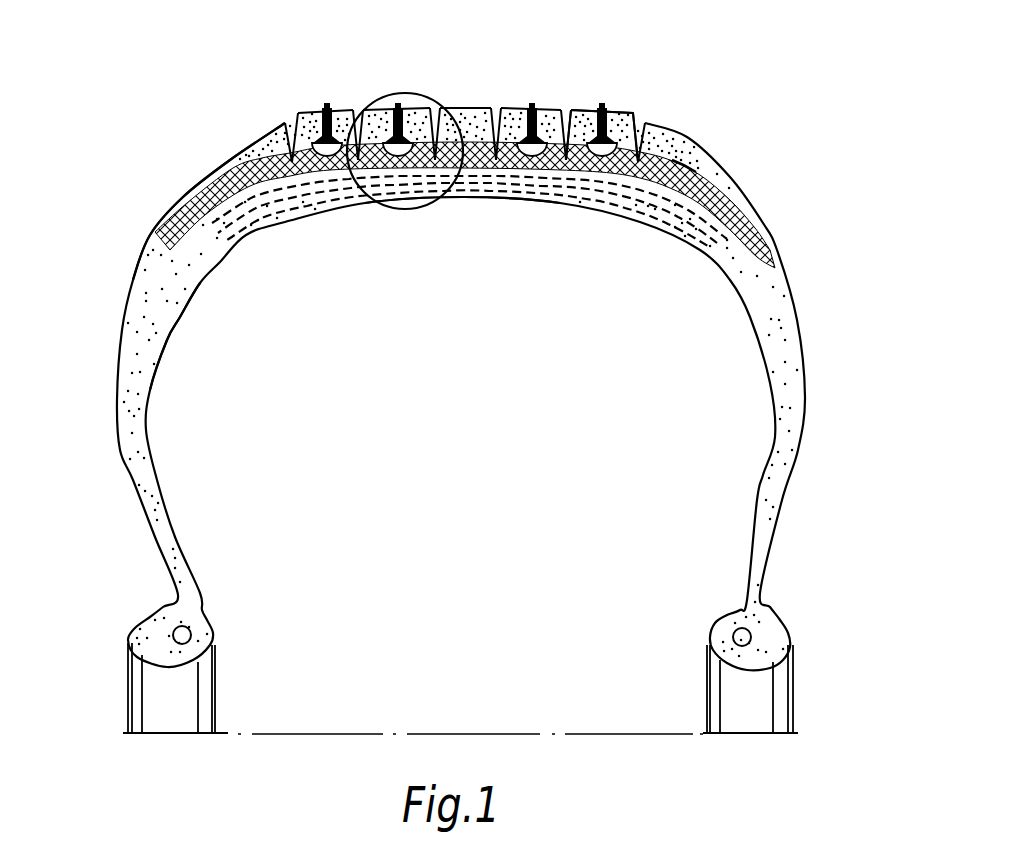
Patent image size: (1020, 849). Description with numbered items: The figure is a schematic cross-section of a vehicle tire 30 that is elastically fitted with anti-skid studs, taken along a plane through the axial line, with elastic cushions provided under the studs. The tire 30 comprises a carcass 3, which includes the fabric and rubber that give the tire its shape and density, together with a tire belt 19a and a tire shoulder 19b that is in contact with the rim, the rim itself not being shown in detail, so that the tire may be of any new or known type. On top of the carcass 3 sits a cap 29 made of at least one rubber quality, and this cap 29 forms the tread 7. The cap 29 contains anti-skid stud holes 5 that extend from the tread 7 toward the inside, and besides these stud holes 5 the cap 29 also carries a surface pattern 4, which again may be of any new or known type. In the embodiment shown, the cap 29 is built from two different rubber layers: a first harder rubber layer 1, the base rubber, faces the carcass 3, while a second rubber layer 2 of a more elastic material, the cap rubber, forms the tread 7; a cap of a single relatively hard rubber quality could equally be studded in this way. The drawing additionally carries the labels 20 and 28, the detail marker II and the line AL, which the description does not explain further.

The first harder rubber layer 1 is at (730, 190).
The second rubber layer 2 is at (662, 127).
The carcass 3 is at (515, 200).
The surface pattern 4 is at (563, 107).
The anti-skid stud holes 5 is at (620, 110).
The tread 7 is at (515, 88).
The tire belt 19a is at (637, 200).
The tire shoulder 19b is at (712, 633).
The stud 20 is at (324, 108).
The belt edge strip 28 is at (685, 162).
The cap 29 is at (178, 181).
The tire 30 is at (195, 342).
The detail II is at (392, 222).
The axis of rotation AL is at (288, 733).